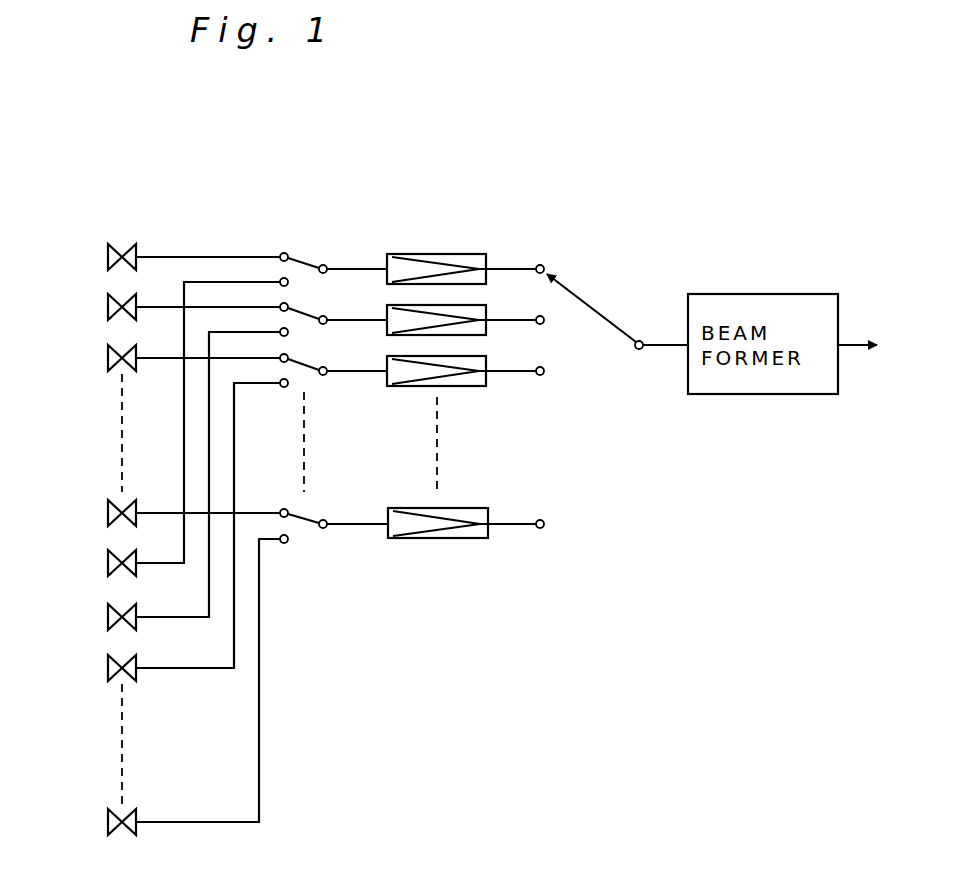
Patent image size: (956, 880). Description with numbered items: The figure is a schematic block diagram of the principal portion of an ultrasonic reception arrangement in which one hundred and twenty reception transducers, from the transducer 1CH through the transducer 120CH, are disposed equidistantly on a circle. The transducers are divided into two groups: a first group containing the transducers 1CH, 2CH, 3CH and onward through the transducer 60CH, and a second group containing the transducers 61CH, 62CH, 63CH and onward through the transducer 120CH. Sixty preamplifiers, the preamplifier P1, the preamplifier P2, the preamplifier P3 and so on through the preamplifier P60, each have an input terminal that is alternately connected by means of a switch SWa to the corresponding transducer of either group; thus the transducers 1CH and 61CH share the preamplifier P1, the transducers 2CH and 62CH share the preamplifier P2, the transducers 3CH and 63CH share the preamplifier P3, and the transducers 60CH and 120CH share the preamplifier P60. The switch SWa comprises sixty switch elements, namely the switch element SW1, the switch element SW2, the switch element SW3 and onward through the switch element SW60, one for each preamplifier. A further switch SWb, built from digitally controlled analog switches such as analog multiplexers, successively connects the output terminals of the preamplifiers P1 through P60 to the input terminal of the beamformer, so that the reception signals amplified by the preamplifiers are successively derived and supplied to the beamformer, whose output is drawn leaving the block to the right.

The reception transducer 1CH is at (168, 257).
The reception transducer 2CH is at (167, 307).
The reception transducer 3CH is at (167, 358).
The reception transducer 60CH is at (162, 513).
The reception transducer 61CH is at (166, 427).
The reception transducer 62CH is at (166, 479).
The reception transducer 63CH is at (166, 530).
The reception transducer 120CH is at (163, 685).
The switch SWa is at (305, 243).
The switch element SW1 is at (320, 260).
The switch element SW2 is at (320, 311).
The switch element SW3 is at (320, 363).
The switch element SW60 is at (320, 515).
The preamplifier P1 is at (488, 254).
The preamplifier P2 is at (488, 305).
The preamplifier P3 is at (488, 356).
The preamplifier P60 is at (488, 507).
The switch SWb is at (601, 257).